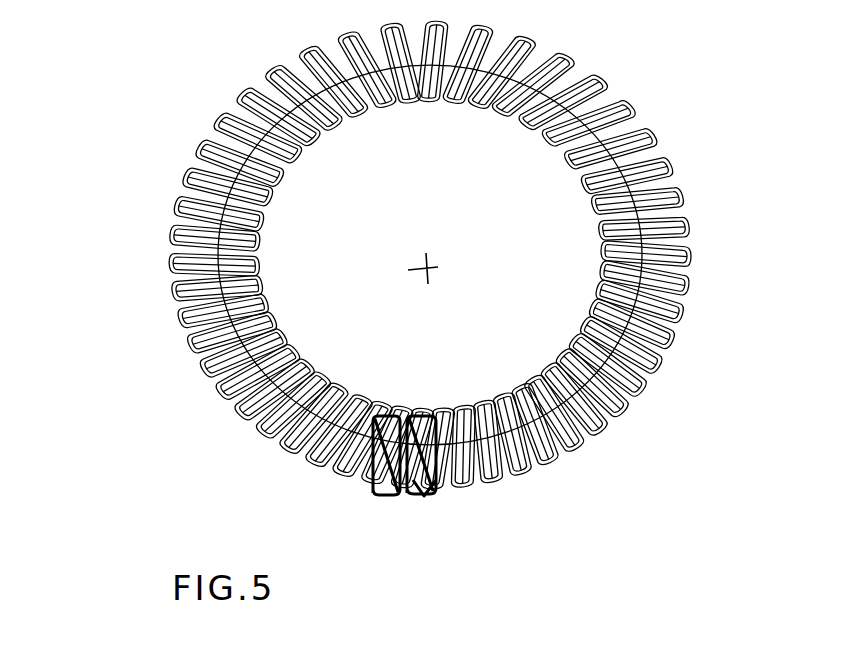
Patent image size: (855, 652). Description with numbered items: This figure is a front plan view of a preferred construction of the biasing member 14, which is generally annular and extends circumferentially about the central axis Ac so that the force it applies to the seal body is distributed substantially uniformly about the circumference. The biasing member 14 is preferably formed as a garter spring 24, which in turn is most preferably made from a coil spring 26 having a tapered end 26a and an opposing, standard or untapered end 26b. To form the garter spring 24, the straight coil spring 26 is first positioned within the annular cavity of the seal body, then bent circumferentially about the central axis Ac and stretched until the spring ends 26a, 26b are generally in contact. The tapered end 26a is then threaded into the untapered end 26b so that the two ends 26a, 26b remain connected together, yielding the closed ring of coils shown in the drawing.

The biasing member 14 is at (140, 126).
The garter spring 24 is at (430, 255).
The coil spring 26 is at (680, 180).
The tapered end 26a is at (440, 477).
The untapered end 26b is at (376, 458).
The central axis Ac is at (432, 262).